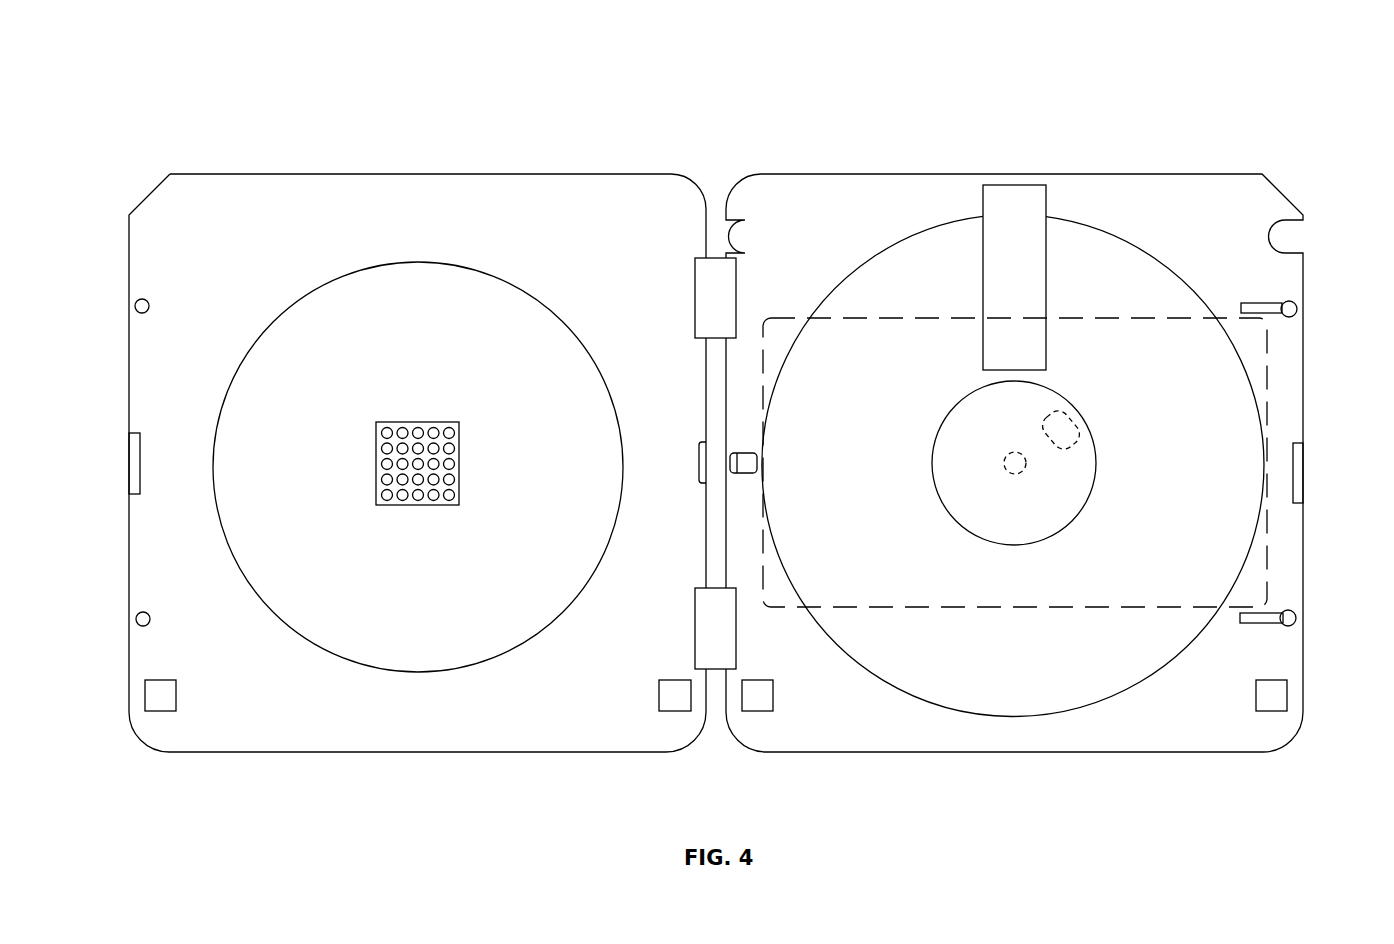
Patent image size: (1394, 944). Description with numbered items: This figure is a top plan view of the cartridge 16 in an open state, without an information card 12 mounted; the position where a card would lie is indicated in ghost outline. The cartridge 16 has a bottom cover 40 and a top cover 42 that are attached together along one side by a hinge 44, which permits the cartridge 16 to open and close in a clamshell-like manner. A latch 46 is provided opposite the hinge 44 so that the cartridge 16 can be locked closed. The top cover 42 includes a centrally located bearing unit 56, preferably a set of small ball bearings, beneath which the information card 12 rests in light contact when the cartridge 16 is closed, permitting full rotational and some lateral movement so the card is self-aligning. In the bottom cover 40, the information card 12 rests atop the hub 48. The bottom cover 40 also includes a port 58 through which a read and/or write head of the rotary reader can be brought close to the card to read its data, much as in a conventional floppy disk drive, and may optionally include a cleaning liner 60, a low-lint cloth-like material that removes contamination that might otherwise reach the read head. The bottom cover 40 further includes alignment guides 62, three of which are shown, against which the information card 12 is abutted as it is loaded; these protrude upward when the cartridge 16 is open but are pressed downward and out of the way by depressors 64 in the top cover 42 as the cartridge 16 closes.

The information card 12 is at (1013, 607).
The cartridge 16 is at (1220, 123).
The bottom cover 40 is at (829, 231).
The top cover 42 is at (642, 231).
The hinge 44 is at (711, 298).
The latch 46 is at (135, 463).
The hub 48 is at (1032, 517).
The bearing unit 56 is at (418, 422).
The port 58 is at (1015, 217).
The cleaning liner 60 is at (1160, 254).
The alignment guides 62 is at (745, 462).
The depressors 64 is at (147, 301).